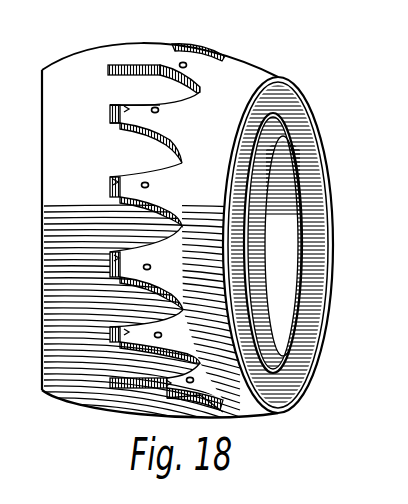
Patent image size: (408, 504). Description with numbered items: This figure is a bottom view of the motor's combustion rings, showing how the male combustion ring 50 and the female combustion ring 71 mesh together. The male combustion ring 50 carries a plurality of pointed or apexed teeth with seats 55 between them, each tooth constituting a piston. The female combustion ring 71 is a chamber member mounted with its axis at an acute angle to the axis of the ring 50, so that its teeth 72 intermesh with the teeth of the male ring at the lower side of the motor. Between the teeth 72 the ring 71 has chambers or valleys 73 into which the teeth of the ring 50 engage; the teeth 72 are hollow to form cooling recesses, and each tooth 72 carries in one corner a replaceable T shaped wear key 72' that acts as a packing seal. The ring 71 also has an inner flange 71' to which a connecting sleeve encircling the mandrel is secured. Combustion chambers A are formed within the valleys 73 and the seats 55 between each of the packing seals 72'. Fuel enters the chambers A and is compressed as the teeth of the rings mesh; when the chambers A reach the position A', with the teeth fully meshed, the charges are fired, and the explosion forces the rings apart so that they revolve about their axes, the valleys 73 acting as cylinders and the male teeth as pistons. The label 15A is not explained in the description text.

The male combustion ring 50 is at (68, 72).
The sawtooth helical member 15A is at (152, 52).
The female combustion ring 71 is at (278, 225).
The inner flange 71' is at (303, 243).
The combustion chambers A is at (195, 79).
The firing position of combustion chambers A' is at (159, 210).
The seats 55 is at (109, 116).
The teeth 72 is at (135, 130).
The T shaped wear key 72' is at (108, 185).
The valleys 73 is at (180, 137).